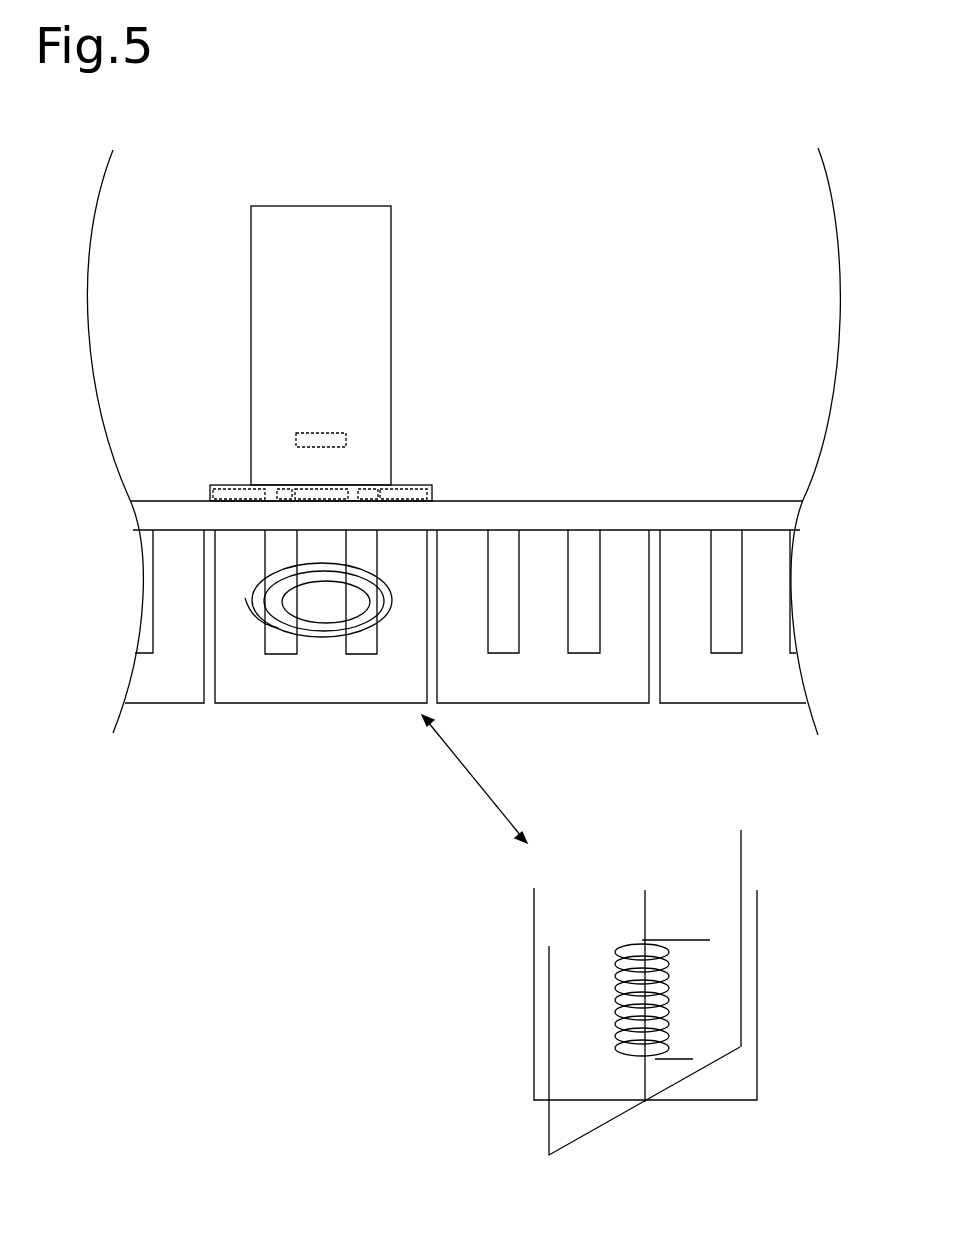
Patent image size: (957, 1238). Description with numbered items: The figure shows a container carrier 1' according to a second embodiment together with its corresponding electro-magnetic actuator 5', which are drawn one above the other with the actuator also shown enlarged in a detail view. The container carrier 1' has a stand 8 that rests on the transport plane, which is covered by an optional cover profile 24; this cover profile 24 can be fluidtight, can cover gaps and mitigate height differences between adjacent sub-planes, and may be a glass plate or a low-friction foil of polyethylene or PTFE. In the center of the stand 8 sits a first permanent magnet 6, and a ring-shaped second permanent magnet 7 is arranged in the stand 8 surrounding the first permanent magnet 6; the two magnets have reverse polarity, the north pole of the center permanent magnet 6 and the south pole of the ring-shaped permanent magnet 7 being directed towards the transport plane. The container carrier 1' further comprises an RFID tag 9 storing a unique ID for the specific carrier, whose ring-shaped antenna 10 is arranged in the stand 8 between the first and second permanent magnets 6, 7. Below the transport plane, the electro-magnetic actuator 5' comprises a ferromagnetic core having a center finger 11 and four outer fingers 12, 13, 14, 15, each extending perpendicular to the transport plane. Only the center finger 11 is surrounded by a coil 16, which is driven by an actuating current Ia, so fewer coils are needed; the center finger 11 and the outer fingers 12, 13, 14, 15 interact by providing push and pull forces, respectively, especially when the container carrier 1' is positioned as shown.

The container carrier 1' is at (300, 109).
The electro-magnetic actuator 5' is at (465, 709).
The first permanent magnet 6 is at (318, 497).
The second permanent magnet 7 is at (405, 497).
The stand 8 is at (433, 490).
The RFID tag 9 is at (322, 437).
The ring shaped antenna 10 is at (363, 500).
The center finger 11 is at (645, 912).
The outer finger 12 is at (740, 898).
The outer finger 13 is at (758, 1037).
The outer finger 14 is at (548, 1132).
The outer finger 15 is at (533, 1030).
The coil 16 is at (673, 1062).
The cover profile 24 is at (598, 512).
The actuating current Ia is at (700, 927).